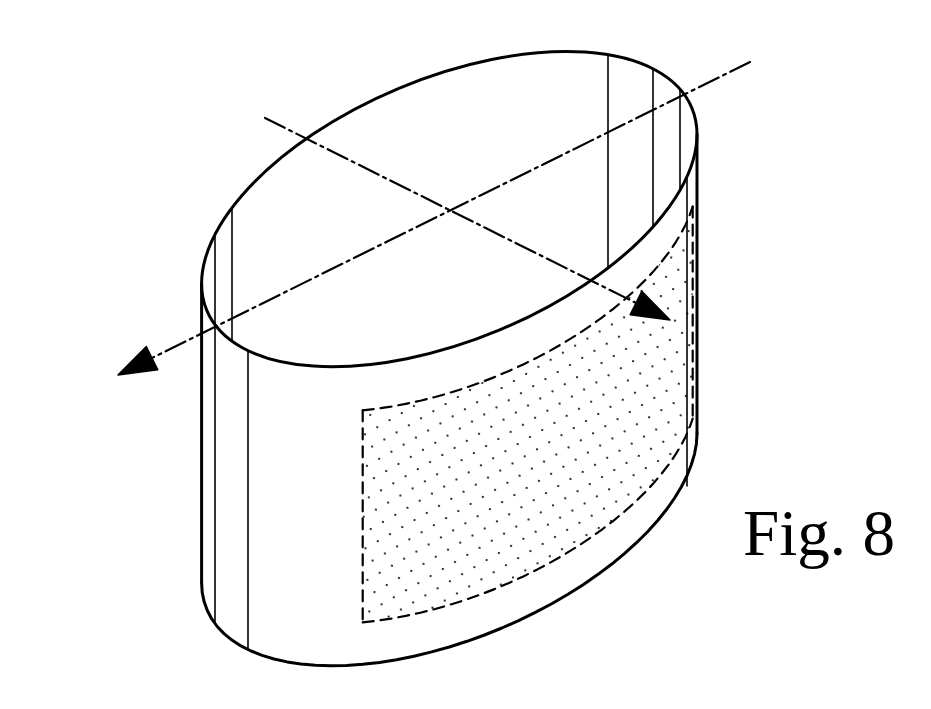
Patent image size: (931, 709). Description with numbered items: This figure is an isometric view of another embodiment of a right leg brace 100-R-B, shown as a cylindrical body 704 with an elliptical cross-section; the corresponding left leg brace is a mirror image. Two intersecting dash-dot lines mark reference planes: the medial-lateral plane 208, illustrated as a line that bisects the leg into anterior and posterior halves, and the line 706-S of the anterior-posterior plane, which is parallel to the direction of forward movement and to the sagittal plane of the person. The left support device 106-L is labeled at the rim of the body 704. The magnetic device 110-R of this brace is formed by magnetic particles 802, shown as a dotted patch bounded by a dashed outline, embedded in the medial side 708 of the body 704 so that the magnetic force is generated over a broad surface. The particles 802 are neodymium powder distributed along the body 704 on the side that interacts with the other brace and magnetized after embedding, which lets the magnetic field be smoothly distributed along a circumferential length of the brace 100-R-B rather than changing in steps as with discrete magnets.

The right leg brace 100-R-B is at (200, 495).
The body 704 is at (348, 112).
The medial side 708 is at (610, 568).
The left support device 106-L is at (233, 200).
The medial-lateral plane 208 is at (363, 170).
The line 706-S is at (723, 73).
The magnetic device 110-R is at (360, 447).
The magnetic particles 802 is at (670, 337).